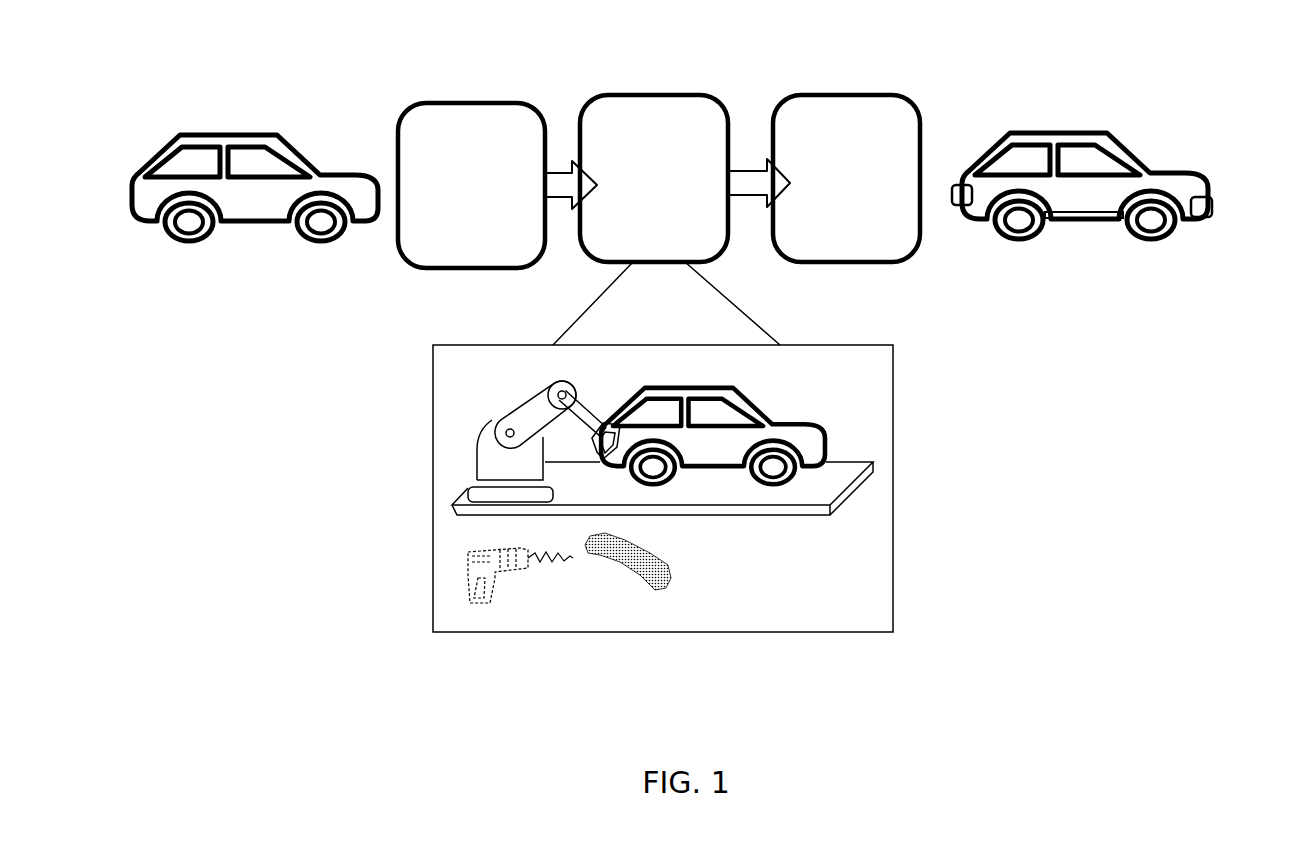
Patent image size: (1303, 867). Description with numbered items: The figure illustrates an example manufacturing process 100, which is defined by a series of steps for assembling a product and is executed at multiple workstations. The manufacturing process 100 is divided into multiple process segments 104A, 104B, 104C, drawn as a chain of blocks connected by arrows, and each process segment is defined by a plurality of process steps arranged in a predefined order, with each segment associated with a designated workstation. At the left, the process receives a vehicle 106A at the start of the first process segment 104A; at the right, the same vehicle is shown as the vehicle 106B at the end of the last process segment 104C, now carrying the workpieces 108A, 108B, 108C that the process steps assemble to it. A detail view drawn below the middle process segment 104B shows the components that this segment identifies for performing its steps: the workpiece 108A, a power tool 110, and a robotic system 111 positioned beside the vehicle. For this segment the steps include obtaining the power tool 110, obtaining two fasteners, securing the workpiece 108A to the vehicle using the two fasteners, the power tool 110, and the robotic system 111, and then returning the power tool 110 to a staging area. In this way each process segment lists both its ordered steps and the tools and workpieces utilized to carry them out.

The manufacturing process 100 is at (476, 68).
The process segment 104A is at (471, 185).
The process segment 104B is at (654, 178).
The process segment 104C is at (846, 178).
The vehicle 106A is at (251, 133).
The vehicle 106B is at (1124, 145).
The workpiece 108A is at (960, 205).
The workpiece 108B is at (1065, 223).
The workpiece 108C is at (1208, 217).
The power tool 110 is at (473, 603).
The robotic system 111 is at (480, 453).